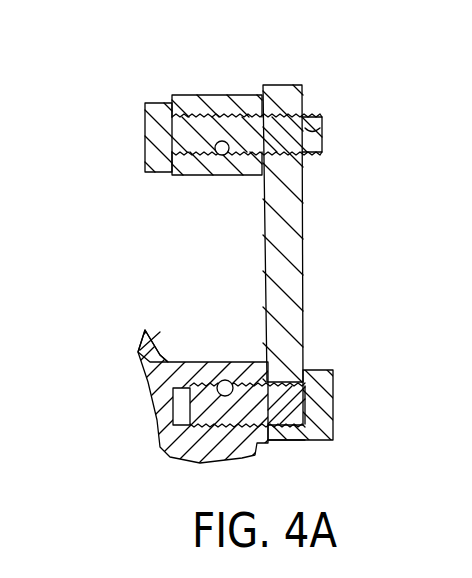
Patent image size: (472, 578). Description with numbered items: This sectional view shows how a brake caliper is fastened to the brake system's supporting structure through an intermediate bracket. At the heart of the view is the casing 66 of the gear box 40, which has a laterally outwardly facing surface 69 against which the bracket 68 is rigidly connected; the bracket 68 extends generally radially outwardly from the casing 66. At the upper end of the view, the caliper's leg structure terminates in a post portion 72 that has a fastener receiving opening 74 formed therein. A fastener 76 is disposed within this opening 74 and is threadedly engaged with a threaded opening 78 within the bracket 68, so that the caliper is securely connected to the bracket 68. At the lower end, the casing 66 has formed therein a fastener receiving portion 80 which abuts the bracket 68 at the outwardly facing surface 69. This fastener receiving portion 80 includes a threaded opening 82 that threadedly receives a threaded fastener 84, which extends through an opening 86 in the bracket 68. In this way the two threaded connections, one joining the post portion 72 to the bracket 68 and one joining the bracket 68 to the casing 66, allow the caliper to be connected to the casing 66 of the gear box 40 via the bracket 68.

The gear box 40 is at (152, 407).
The casing 66 is at (160, 350).
The bracket 68 is at (290, 90).
The laterally outwardly facing surface 69 is at (288, 442).
The post portion 72 is at (198, 95).
The fastener receiving opening 74 is at (227, 158).
The fastener 76 is at (153, 127).
The threaded opening 78 is at (303, 132).
The fastener receiving portion 80 is at (170, 452).
The threaded opening 82 is at (222, 386).
The threaded fastener 84 is at (333, 370).
The opening 86 is at (328, 398).